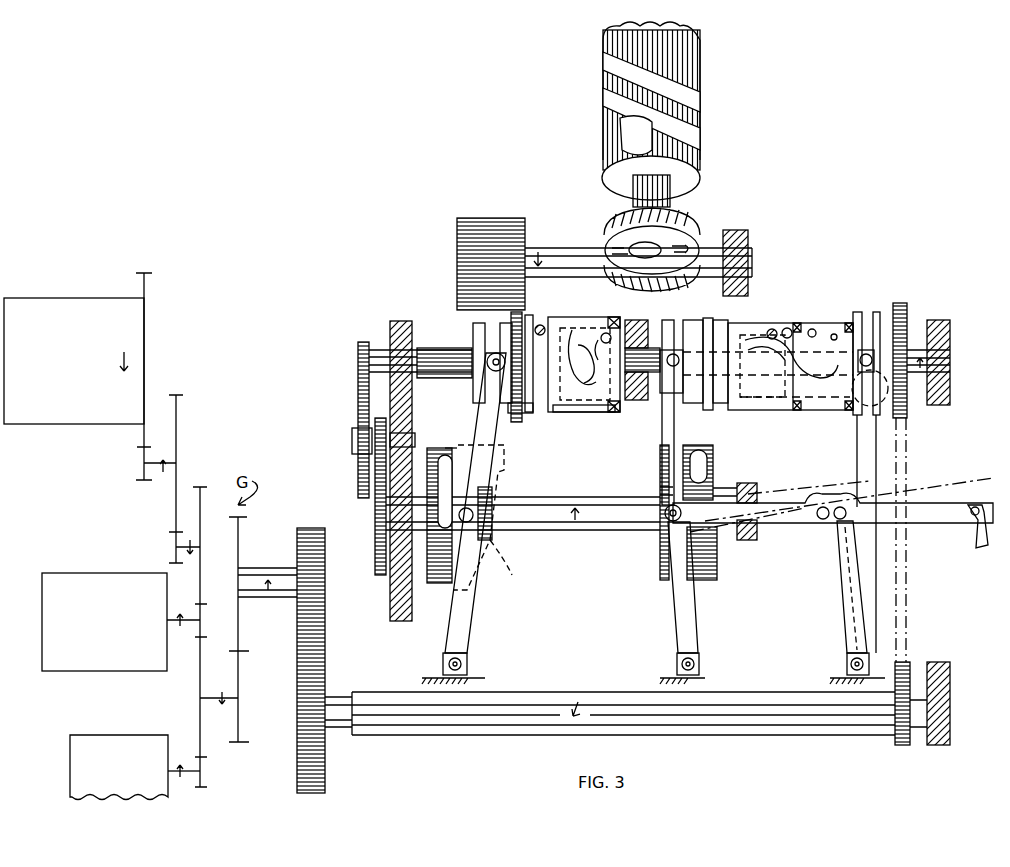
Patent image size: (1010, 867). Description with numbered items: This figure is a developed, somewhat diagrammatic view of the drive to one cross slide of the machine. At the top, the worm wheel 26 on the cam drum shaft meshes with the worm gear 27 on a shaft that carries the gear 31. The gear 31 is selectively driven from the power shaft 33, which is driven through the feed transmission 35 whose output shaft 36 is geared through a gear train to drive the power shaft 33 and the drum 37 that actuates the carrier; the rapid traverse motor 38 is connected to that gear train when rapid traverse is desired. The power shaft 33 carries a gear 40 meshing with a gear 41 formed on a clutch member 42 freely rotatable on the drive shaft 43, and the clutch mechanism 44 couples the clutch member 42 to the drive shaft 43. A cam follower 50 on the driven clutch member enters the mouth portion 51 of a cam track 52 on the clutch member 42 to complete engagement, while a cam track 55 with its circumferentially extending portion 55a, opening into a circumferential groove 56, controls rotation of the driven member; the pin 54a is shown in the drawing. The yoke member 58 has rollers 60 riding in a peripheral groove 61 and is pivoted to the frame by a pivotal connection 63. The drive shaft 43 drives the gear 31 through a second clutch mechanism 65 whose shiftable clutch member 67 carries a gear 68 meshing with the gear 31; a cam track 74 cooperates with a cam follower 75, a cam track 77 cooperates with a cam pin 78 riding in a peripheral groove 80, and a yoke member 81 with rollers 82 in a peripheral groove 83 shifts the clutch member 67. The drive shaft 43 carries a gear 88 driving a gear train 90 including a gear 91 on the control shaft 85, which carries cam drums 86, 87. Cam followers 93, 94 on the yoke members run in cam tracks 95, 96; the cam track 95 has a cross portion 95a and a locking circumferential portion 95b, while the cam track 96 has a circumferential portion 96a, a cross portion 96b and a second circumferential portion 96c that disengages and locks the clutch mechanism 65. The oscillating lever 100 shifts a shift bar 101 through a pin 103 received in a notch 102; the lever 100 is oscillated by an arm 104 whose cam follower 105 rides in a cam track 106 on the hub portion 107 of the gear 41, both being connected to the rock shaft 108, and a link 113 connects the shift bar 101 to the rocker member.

The worm wheel 26 is at (616, 108).
The worm gear 27 is at (609, 218).
The gear 31 is at (456, 247).
The power shaft 33 is at (643, 690).
The feed transmission 35 is at (117, 577).
The output shaft 36 is at (176, 621).
The drum 37 is at (109, 299).
The rapid traverse motor 38 is at (147, 737).
The gear 40 is at (896, 745).
The gear 41 is at (908, 410).
The clutch member 42 is at (859, 405).
The drive shaft 43 is at (421, 320).
The clutch mechanism 44 is at (788, 418).
The cam follower 50 is at (812, 329).
The mouth portion 51 is at (834, 334).
The cam track 52 is at (794, 357).
The arm 54a is at (788, 329).
The cam track 55 is at (773, 329).
The circumferentially extending portion 55a is at (766, 358).
The circumferential groove 56 is at (723, 308).
The yoke member 58 is at (662, 428).
The rollers 60 is at (694, 320).
The peripheral groove 61 is at (671, 354).
The pivotal connection 63 is at (701, 651).
The clutch mechanism 65 is at (571, 416).
The clutch member 67 is at (519, 422).
The gear 68 is at (477, 328).
The cam track 74 is at (584, 364).
The cam follower 75 is at (606, 333).
The cam track 77 is at (583, 412).
The cam pin 78 is at (551, 303).
The peripheral groove 80 is at (531, 413).
The yoke member 81 is at (490, 441).
The rollers 82 is at (479, 366).
The peripheral groove 83 is at (495, 339).
The control shaft 85 is at (534, 525).
The cam drum 86 is at (701, 449).
The cam drum 87 is at (463, 448).
The gear 88 is at (358, 358).
The gear train 90 is at (350, 469).
The gear 91 is at (375, 531).
The cam follower 93 is at (665, 506).
The cam follower 94 is at (491, 500).
The cam track 95 is at (703, 580).
The cross portion 95a is at (663, 529).
The circumferentially extending cam portion 95b is at (716, 553).
The cam track 96 is at (465, 592).
The circumferentially-extending portion 96a is at (511, 562).
The cross portion 96b is at (510, 474).
The second circumferentially-extending portion 96c is at (445, 448).
The oscillating lever 100 is at (844, 578).
The shift bar 101 is at (783, 526).
The notch 102 is at (838, 505).
The pin 103 is at (836, 523).
The arm 104 is at (865, 443).
The cam follower 105 is at (880, 331).
The cam track 106 is at (862, 312).
The hub portion 107 is at (930, 309).
The rock shaft 108 is at (846, 664).
The link 113 is at (966, 533).